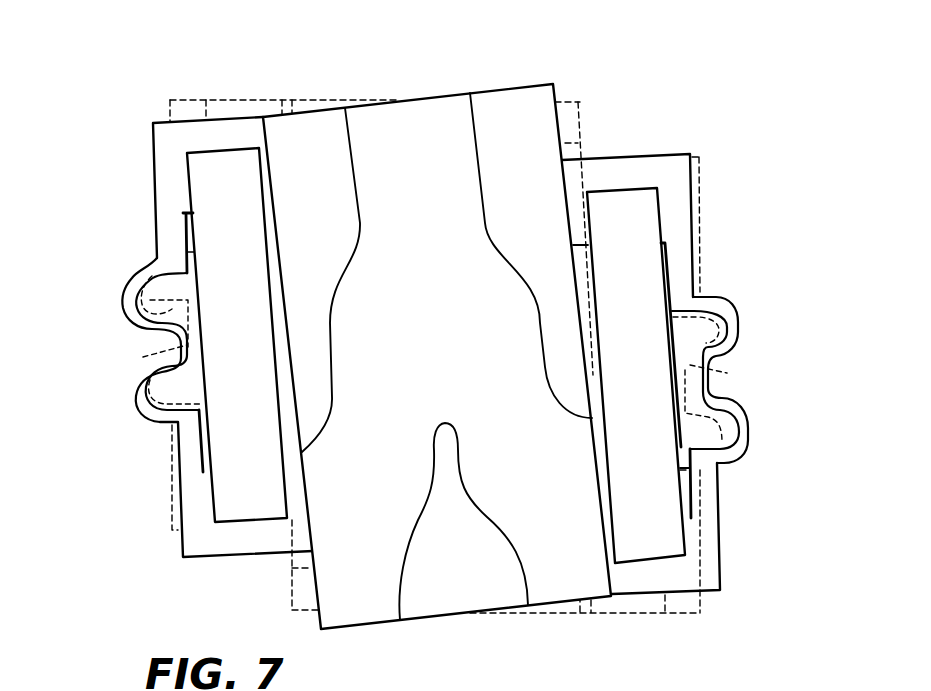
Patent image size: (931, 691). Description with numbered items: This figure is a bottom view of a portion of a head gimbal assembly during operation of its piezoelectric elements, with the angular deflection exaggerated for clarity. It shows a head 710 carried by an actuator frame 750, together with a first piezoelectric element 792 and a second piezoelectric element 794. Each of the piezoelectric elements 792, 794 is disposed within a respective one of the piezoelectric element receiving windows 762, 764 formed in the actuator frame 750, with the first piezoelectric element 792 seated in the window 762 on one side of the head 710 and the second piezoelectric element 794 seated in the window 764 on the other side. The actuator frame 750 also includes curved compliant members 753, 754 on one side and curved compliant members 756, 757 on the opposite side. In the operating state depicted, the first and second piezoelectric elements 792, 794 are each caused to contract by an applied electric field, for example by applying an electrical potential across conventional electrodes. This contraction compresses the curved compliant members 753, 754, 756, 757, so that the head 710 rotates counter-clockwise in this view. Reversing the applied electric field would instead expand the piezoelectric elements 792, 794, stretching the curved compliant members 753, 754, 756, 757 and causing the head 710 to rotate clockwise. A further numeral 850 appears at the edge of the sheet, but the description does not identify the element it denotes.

The head 710 is at (418, 131).
The actuator frame 750 is at (642, 155).
The curved compliant member 753 is at (123, 298).
The curved compliant member 754 is at (135, 395).
The curved compliant member 756 is at (740, 325).
The curved compliant member 757 is at (749, 432).
The piezoelectric element receiving window 762 is at (177, 387).
The piezoelectric element receiving window 764 is at (692, 333).
The first piezoelectric element 792 is at (237, 448).
The second piezoelectric element 794 is at (637, 221).
The frame member 850 is at (679, 684).